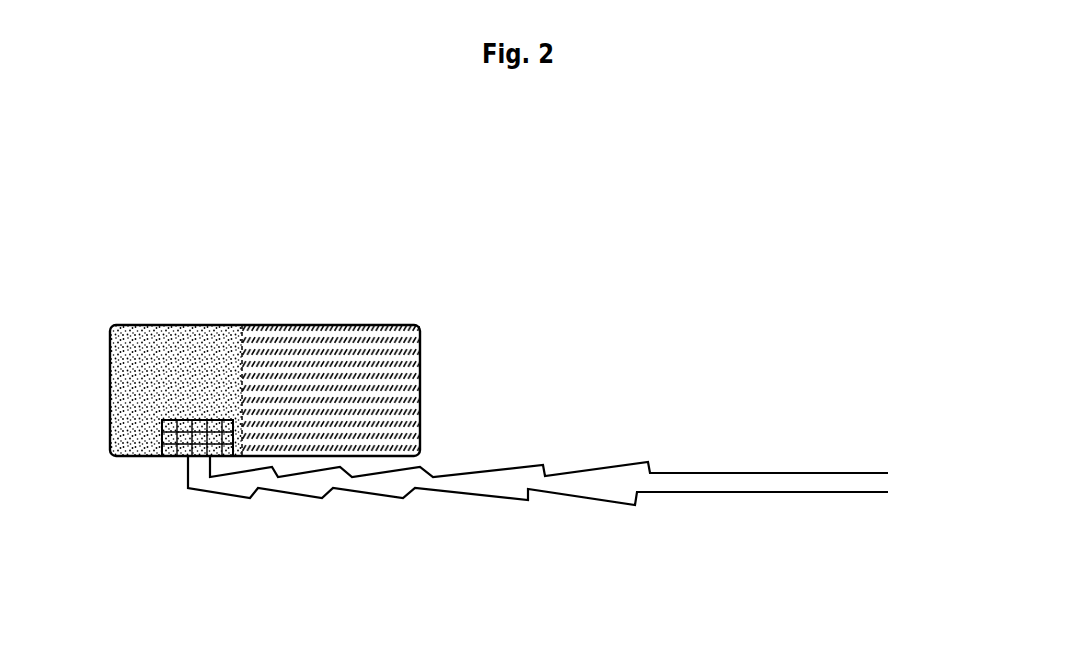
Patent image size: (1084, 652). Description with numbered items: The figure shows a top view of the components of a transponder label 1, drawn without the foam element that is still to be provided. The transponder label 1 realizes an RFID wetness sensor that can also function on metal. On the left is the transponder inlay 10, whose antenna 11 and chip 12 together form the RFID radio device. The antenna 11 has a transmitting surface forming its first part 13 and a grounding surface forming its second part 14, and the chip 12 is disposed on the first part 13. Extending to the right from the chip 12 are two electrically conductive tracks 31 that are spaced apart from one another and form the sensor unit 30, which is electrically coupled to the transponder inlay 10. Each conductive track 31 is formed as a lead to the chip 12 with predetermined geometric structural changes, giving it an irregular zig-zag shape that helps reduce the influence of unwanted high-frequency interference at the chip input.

The transponder label 1 is at (655, 215).
The transponder inlay 10 is at (362, 283).
The antenna 11 is at (182, 315).
The chip 12 is at (173, 445).
The first part of the antenna 13 is at (222, 335).
The second part of the antenna 14 is at (403, 355).
The sensor unit 30 is at (538, 481).
The conductive tracks 31 is at (617, 465).